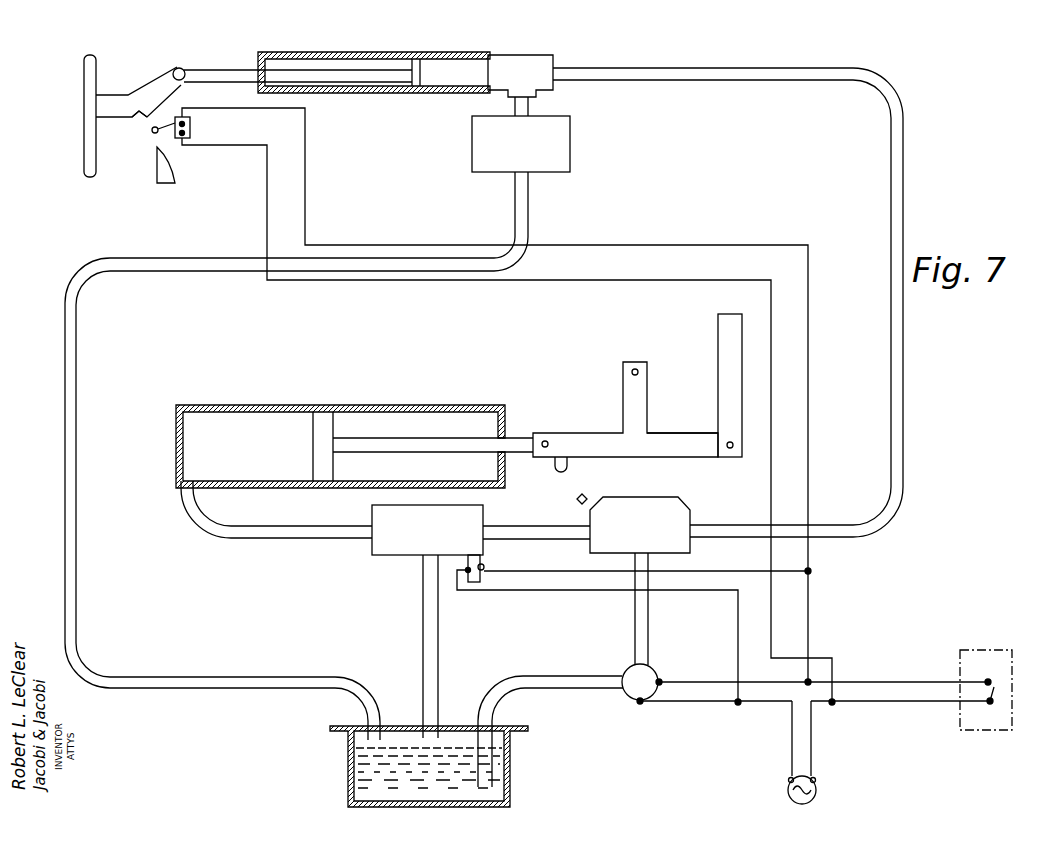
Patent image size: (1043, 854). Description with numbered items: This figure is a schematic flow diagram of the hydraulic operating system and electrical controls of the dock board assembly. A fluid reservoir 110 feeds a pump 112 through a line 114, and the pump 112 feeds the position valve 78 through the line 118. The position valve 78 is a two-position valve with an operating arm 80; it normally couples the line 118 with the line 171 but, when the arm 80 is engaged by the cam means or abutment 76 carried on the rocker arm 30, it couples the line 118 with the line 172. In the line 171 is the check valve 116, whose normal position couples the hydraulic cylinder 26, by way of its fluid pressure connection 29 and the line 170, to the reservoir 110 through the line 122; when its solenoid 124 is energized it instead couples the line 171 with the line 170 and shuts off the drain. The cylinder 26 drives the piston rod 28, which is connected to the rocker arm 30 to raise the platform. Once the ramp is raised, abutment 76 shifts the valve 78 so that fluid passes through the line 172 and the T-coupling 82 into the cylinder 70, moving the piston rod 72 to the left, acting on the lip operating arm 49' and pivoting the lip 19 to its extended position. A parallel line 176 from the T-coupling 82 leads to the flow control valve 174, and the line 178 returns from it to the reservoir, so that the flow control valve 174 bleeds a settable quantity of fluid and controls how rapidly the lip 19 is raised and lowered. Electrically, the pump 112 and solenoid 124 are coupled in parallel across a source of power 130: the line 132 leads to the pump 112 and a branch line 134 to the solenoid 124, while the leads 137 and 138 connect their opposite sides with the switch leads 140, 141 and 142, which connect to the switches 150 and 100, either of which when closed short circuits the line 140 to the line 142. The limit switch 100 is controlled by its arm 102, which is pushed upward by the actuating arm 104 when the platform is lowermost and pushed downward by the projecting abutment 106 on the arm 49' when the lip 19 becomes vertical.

The lip 19 is at (83, 90).
The lip operating arm 49' is at (140, 85).
The piston rod 72 is at (213, 67).
The cylinder 70 is at (400, 52).
The T-coupling 82 is at (553, 62).
The parallel line 176 is at (530, 102).
The flow control valve 174 is at (571, 146).
The switch arm 102 is at (166, 126).
The limit switch 100 is at (191, 127).
The projecting abutment 106 is at (136, 119).
The actuating arm 104 is at (176, 171).
The return line 178 is at (63, 303).
The hydraulic cylinder 26 is at (266, 404).
The fluid pressure connection 29 is at (191, 479).
The piston rod 28 is at (519, 435).
The rocker arm 30 is at (668, 419).
The operating arm 80 is at (657, 457).
The cam means 76 is at (551, 471).
The line 170 is at (236, 540).
The check valve 116 is at (381, 560).
The line 171 is at (525, 525).
The position valve 78 is at (691, 513).
The line 172 is at (905, 492).
The solenoid 124 is at (487, 567).
The lead 138 is at (718, 571).
The branch line 134 is at (735, 598).
The switch lead 141 is at (773, 631).
The lead 137 is at (815, 636).
The line 122 is at (438, 643).
The line 118 is at (634, 632).
The pump 112 is at (622, 696).
The line 114 is at (582, 693).
The switch lead 140 is at (866, 678).
The switch lead 142 is at (893, 700).
The switch 150 is at (983, 658).
The line 132 is at (773, 710).
The source of power 130 is at (817, 791).
The fluid reservoir 110 is at (513, 766).